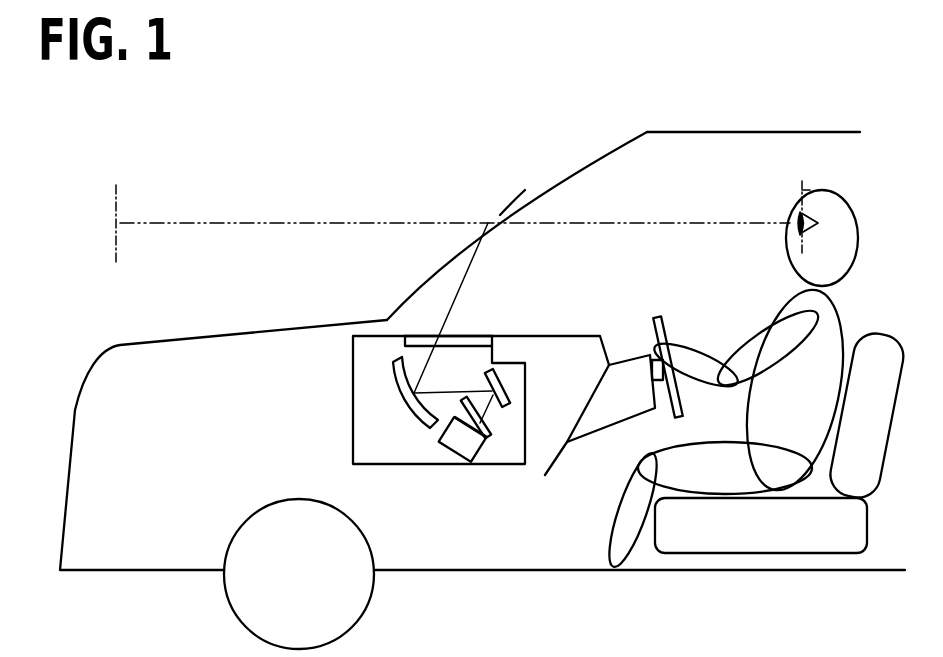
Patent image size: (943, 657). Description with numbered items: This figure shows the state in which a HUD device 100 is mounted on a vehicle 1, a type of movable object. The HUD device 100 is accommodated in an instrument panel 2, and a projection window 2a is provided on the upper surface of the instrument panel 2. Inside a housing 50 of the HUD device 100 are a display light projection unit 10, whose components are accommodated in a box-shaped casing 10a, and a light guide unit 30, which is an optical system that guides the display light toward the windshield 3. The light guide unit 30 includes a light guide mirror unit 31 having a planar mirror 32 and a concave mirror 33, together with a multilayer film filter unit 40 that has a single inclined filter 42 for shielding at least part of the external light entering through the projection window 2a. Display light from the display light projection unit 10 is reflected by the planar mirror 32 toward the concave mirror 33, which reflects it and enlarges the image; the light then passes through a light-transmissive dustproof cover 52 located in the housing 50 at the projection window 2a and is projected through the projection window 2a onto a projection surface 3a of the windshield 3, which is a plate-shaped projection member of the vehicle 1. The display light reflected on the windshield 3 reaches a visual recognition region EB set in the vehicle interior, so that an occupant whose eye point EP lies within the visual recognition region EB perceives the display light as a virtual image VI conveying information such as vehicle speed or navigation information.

The vehicle 1 is at (830, 132).
The instrument panel 2 is at (520, 360).
The projection window 2a is at (405, 343).
The windshield 3 is at (517, 225).
The projection surface 3a is at (510, 210).
The display light projection unit 10 is at (435, 478).
The casing 10a is at (447, 449).
The light guide unit 30 is at (399, 366).
The light guide mirror unit 31 is at (365, 395).
The planar mirror 32 is at (490, 373).
The concave mirror 33 is at (402, 400).
The multilayer film filter unit 40 is at (519, 453).
The inclined filter 42 is at (490, 424).
The housing 50 is at (399, 381).
The dustproof cover 52 is at (489, 336).
The HUD device 100 is at (380, 381).
The eye point EP is at (796, 219).
The visual recognition region EB is at (804, 190).
The virtual image VI is at (118, 205).